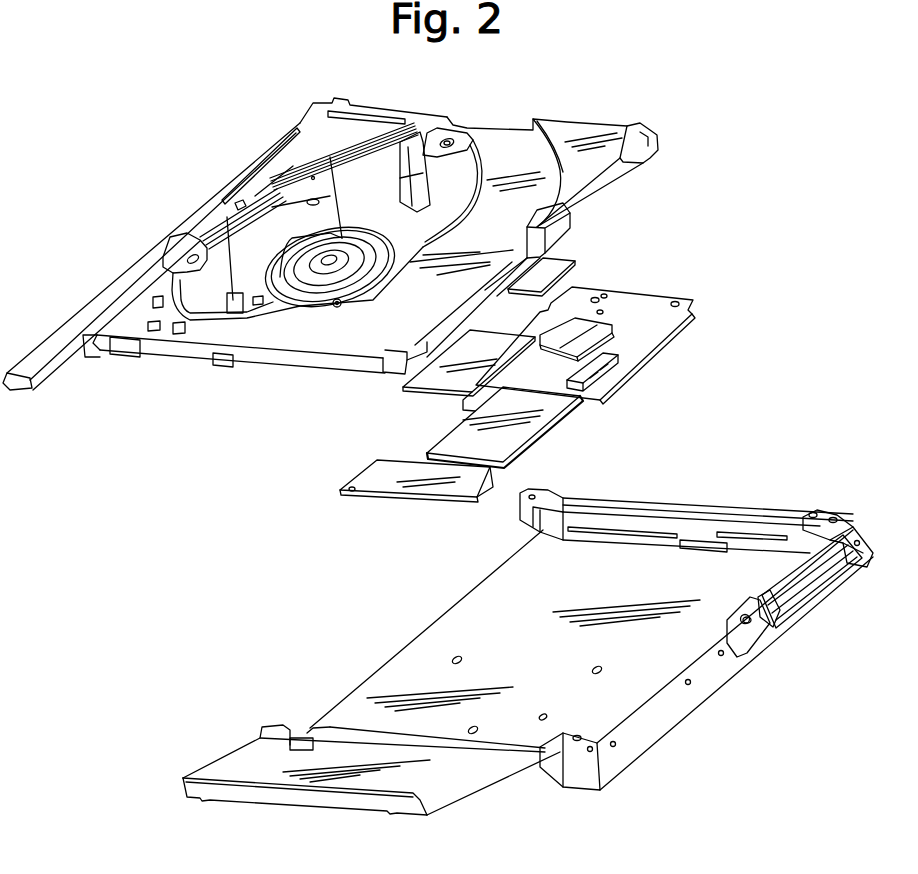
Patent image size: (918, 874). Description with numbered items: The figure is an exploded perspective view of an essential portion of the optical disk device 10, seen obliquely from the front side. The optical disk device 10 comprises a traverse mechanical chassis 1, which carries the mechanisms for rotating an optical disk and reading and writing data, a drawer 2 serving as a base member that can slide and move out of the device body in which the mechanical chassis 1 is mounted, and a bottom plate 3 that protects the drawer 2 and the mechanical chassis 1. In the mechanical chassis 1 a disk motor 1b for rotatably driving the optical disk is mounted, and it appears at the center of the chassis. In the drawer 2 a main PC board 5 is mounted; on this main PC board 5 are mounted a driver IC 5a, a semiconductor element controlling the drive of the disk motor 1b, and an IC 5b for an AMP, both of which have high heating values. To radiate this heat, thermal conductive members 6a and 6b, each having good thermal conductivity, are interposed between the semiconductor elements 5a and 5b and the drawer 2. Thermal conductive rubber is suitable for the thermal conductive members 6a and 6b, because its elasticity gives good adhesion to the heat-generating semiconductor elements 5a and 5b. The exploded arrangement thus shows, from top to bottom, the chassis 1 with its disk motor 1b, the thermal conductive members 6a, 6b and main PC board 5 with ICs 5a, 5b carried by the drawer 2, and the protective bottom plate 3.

The traverse mechanical chassis 1 is at (210, 297).
The disk motor 1b is at (323, 257).
The drawer 2 is at (370, 303).
The bottom plate 3 is at (493, 613).
The main PC board 5 is at (388, 477).
The driver IC 5a is at (573, 337).
The IC for an AMP 5b is at (580, 427).
The thermal conductive member 6a is at (557, 257).
The thermal conductive member 6b is at (440, 375).
The optical disk device 10 is at (180, 472).